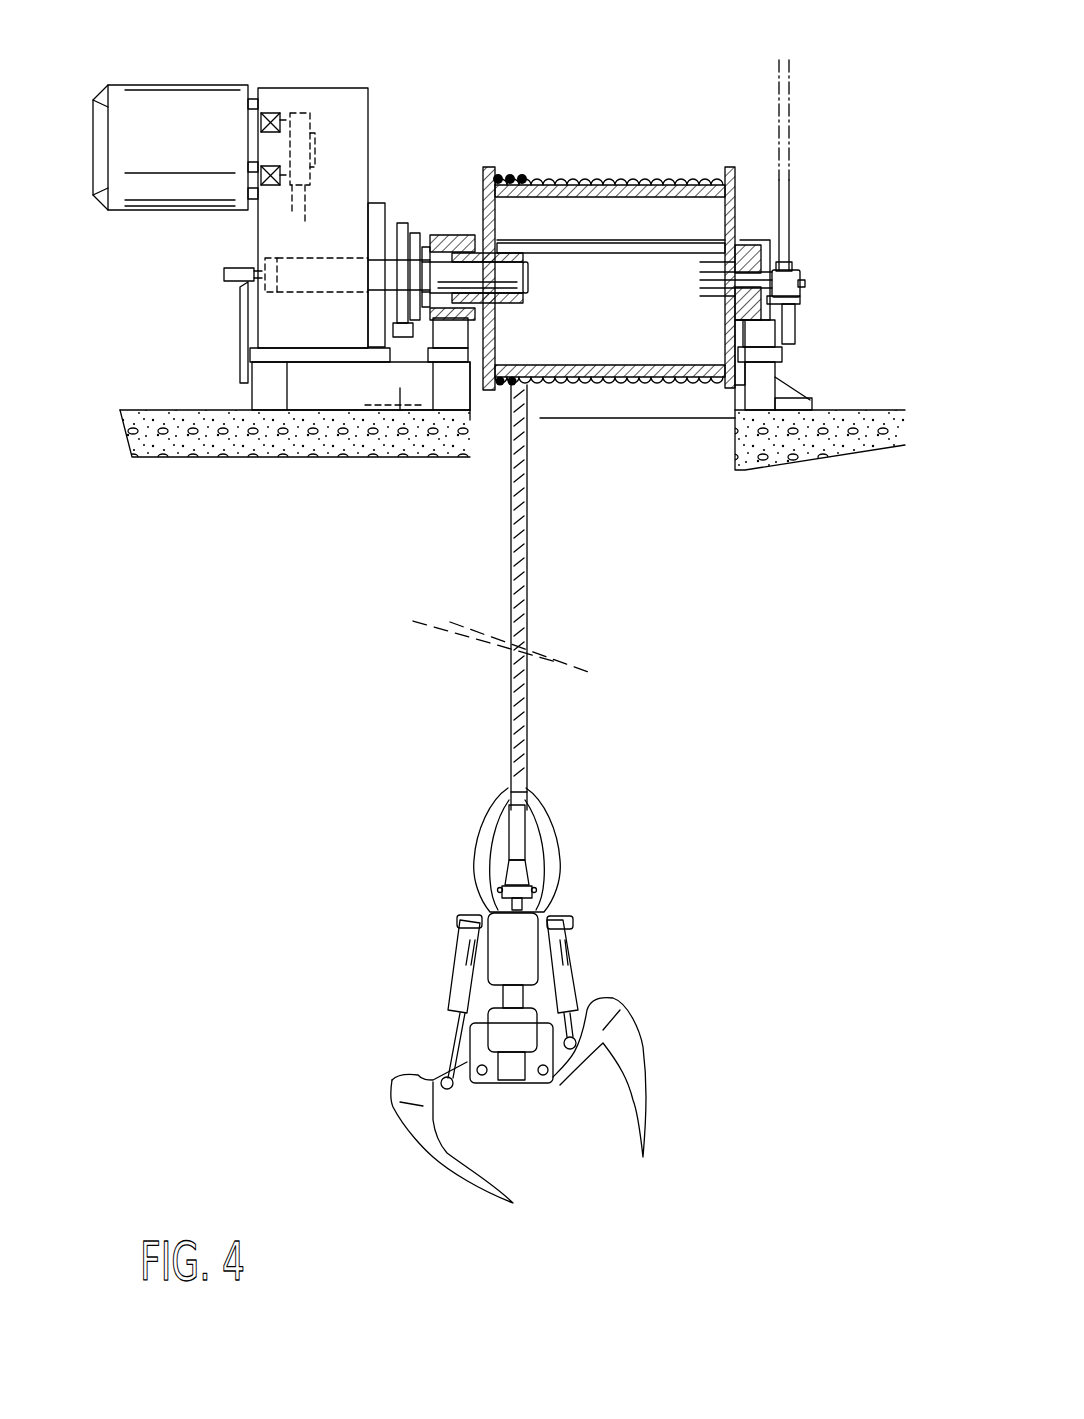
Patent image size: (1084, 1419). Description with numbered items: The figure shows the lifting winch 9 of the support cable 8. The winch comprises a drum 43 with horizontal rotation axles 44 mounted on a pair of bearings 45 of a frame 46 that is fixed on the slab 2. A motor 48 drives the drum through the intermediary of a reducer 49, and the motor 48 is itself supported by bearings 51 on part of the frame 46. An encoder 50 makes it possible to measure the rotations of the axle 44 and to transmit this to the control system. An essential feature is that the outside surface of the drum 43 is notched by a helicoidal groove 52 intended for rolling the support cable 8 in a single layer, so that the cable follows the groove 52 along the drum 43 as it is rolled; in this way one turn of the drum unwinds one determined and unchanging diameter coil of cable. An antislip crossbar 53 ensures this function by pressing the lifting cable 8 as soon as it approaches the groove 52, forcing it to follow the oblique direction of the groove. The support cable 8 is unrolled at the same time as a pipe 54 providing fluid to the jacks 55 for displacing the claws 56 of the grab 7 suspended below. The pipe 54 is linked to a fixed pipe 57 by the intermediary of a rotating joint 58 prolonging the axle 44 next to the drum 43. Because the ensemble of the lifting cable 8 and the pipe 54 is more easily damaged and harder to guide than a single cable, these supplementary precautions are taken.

The slab 2 is at (213, 427).
The grab 7 is at (425, 915).
The support cable 8 is at (522, 520).
The lifting winch 9 is at (452, 98).
The drum 43 is at (648, 168).
The rotation axle 44 is at (672, 262).
The bearings 45 is at (514, 300).
The frame 46 is at (760, 382).
The motor 48 is at (158, 112).
The reducer 49 is at (343, 110).
The encoder 50 is at (218, 272).
The bearings 51 is at (268, 112).
The helicoidal groove 52 is at (568, 185).
The antislip crossbar 53 is at (545, 242).
The pipe 54 is at (555, 832).
The jacks 55 is at (575, 946).
The claws 56 is at (640, 1093).
The fixed pipe 57 is at (790, 183).
The rotating joint 58 is at (790, 280).